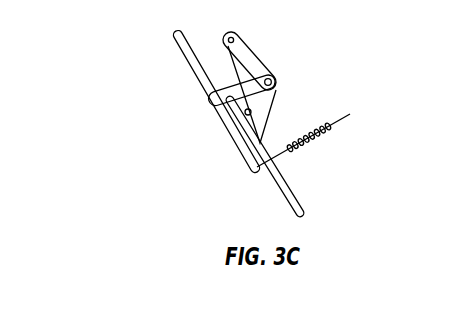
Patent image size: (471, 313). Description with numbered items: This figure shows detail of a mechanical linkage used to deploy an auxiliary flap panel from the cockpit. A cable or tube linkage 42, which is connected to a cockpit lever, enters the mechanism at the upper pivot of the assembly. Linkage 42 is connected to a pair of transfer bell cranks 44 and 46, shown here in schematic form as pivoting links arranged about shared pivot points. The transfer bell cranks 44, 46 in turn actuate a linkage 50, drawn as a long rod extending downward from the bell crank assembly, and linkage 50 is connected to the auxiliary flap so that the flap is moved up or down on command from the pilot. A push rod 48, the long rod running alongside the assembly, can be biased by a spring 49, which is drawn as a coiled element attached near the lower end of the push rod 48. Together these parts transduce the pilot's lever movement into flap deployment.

The cable or tube linkage 42 is at (237, 40).
The transfer bell crank 44 is at (273, 63).
The transfer bell crank 46 is at (272, 97).
The push rod 48 is at (188, 71).
The spring 49 is at (312, 143).
The linkage 50 is at (280, 191).